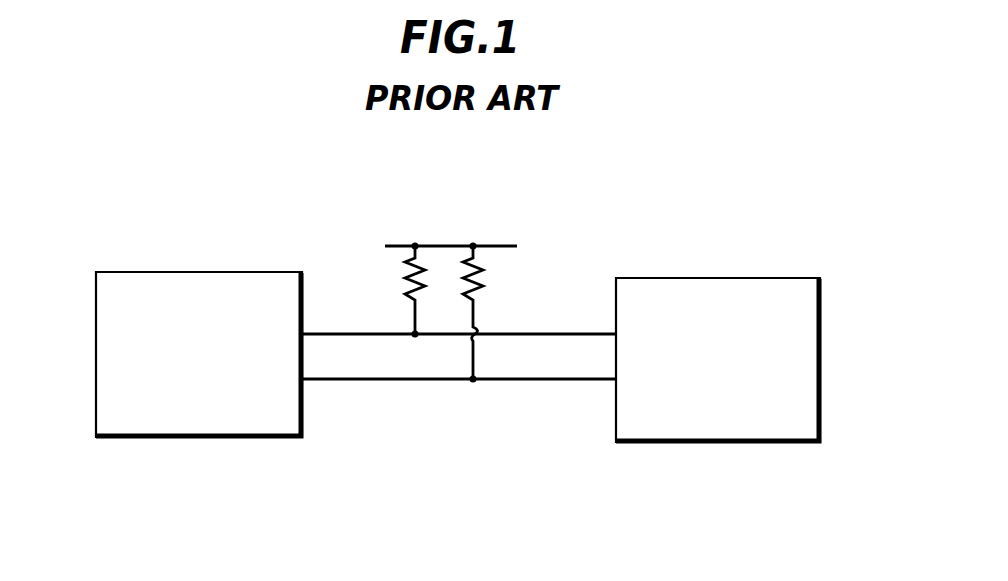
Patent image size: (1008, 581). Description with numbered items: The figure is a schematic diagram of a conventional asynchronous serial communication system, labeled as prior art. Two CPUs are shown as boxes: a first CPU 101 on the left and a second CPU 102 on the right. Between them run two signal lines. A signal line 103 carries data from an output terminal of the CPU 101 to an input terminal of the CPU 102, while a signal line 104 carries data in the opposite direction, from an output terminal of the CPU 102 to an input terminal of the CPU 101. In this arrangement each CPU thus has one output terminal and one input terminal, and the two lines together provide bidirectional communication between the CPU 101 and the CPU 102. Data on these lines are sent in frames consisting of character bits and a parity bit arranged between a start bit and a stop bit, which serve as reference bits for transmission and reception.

The CPU 101 is at (207, 272).
The CPU 102 is at (685, 278).
The signal line 103 is at (333, 334).
The signal line 104 is at (412, 380).